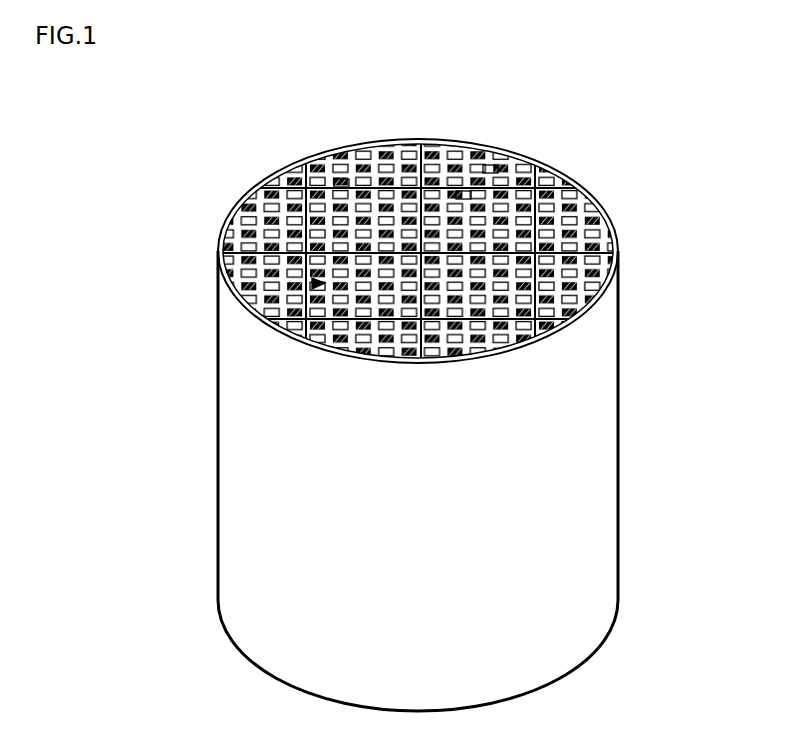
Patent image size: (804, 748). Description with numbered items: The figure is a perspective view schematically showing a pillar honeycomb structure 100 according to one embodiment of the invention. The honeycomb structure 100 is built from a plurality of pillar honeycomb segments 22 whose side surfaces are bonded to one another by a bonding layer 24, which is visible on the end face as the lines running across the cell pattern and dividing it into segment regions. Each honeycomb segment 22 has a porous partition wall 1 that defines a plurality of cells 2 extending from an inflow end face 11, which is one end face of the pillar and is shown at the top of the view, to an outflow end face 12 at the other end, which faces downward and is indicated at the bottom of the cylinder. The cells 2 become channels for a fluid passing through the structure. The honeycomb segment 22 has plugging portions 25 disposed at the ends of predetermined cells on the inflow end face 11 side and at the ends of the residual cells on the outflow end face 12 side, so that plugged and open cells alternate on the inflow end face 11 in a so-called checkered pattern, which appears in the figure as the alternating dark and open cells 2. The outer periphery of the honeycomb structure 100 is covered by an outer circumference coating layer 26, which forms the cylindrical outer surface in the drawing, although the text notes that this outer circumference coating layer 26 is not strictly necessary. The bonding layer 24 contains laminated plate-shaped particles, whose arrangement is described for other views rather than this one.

The honeycomb structure 100 is at (732, 124).
The partition wall 1 is at (490, 170).
The cells 2 is at (342, 183).
The inflow end face 11 is at (257, 187).
The outflow end face 12 is at (562, 682).
The honeycomb segment 22 is at (312, 281).
The bonding layer 24 is at (463, 188).
The plugging portions 25 is at (575, 192).
The outer circumference coating layer 26 is at (583, 317).